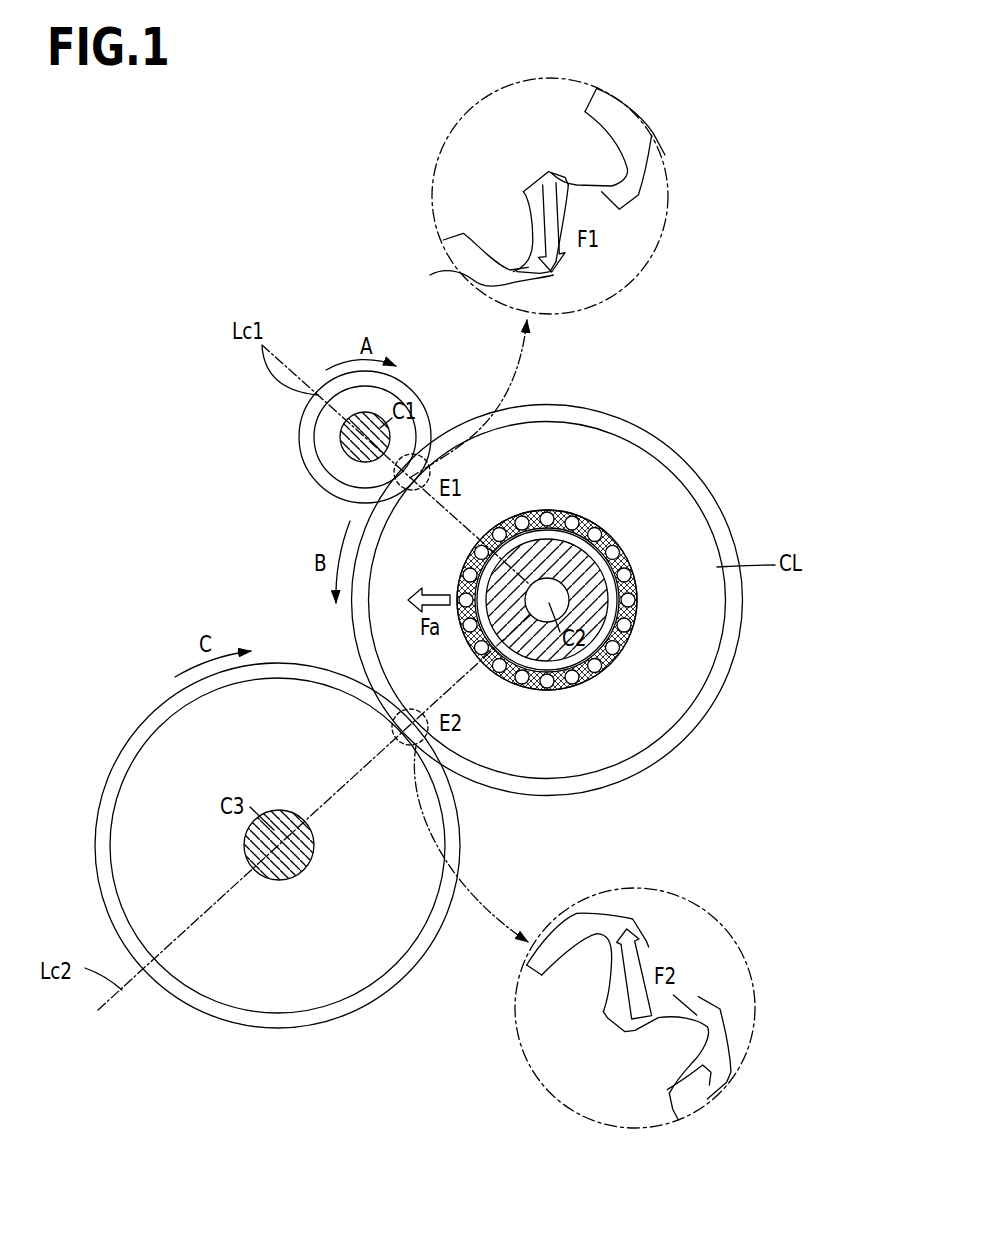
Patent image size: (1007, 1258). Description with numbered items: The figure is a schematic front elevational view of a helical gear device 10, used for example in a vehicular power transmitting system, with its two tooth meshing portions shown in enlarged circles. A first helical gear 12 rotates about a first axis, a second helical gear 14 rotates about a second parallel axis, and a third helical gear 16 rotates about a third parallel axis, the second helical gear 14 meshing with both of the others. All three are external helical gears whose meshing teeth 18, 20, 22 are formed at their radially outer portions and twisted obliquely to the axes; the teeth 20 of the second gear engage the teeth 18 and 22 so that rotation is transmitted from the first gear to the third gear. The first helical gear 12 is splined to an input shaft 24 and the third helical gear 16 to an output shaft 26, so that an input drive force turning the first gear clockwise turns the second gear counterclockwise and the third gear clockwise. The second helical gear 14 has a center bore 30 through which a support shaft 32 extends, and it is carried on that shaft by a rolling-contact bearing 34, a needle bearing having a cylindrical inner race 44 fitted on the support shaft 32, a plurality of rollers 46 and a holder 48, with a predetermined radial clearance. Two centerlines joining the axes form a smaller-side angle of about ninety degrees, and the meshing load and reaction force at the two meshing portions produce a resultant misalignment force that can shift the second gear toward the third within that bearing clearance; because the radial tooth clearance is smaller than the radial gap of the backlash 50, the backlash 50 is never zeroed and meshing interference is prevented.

The helical gear device 10 is at (160, 396).
The first helical gear 12 is at (326, 368).
The second helical gear 14 is at (644, 409).
The third helical gear 16 is at (138, 700).
The meshing teeth 18 is at (299, 432).
The meshing teeth 20 is at (680, 735).
The meshing teeth 22 is at (377, 987).
The input shaft 24 is at (357, 450).
The output shaft 26 is at (278, 880).
The center bore 30 is at (540, 690).
The support shaft 32 is at (585, 508).
The rolling-contact bearing 34 is at (632, 661).
The inner race 44 is at (642, 612).
The rollers 46 is at (547, 519).
The holder 48 is at (604, 683).
The backlash 50 is at (597, 993).